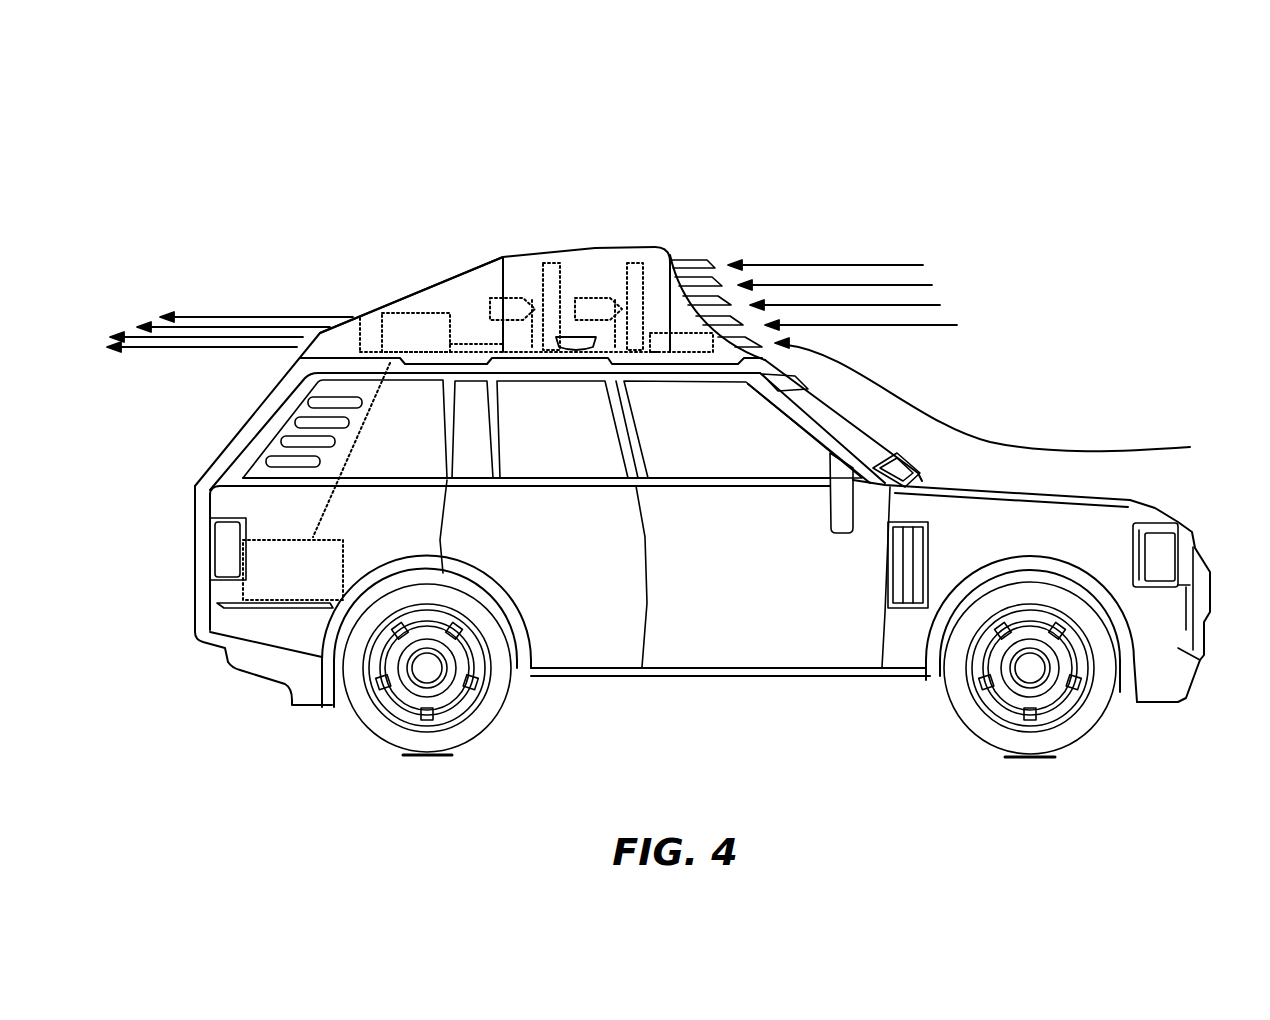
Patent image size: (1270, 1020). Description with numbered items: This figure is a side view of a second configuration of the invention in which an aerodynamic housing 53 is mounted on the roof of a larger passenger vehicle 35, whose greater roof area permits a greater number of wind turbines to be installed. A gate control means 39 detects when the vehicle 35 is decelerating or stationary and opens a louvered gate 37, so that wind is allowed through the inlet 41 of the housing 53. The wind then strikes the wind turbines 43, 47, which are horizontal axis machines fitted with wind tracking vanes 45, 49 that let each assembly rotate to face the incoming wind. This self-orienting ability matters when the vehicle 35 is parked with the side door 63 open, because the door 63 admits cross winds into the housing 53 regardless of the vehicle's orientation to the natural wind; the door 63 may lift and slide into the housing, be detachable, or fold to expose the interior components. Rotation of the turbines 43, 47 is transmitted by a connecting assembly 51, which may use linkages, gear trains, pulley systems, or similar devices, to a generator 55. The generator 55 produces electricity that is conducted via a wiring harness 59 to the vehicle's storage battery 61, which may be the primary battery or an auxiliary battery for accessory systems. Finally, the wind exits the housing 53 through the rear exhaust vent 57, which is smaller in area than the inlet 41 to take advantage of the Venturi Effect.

The passenger vehicle 35 is at (1153, 507).
The louvered gate 37 is at (707, 260).
The gate control means 39 is at (686, 343).
The inlet 41 is at (686, 313).
The wind turbine 43 is at (637, 283).
The wind tracking vane 45 is at (597, 298).
The wind turbine 47 is at (550, 262).
The wind tracking vane 49 is at (513, 298).
The connecting assembly 51 is at (472, 345).
The aerodynamic housing 53 is at (430, 287).
The generator 55 is at (390, 323).
The rear exhaust vent 57 is at (360, 347).
The wiring harness 59 is at (347, 450).
The storage battery 61 is at (260, 548).
The side door 63 is at (573, 350).